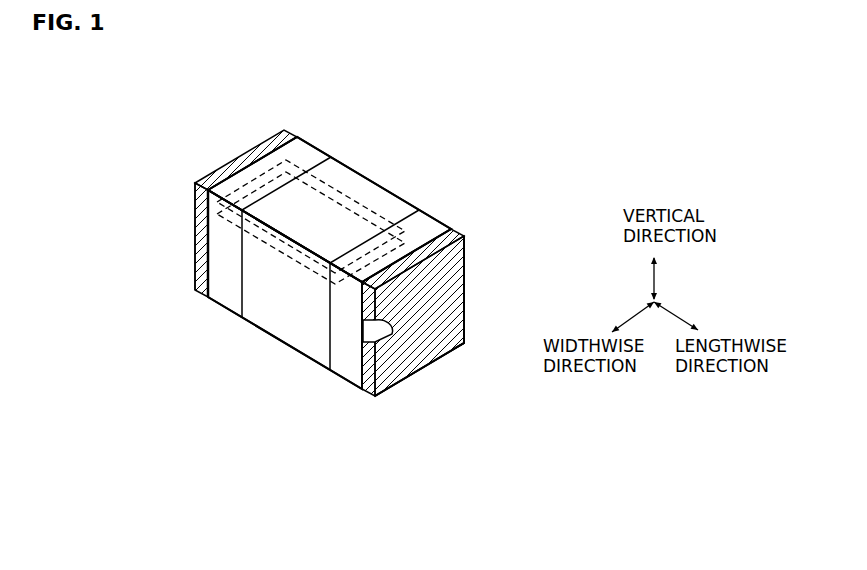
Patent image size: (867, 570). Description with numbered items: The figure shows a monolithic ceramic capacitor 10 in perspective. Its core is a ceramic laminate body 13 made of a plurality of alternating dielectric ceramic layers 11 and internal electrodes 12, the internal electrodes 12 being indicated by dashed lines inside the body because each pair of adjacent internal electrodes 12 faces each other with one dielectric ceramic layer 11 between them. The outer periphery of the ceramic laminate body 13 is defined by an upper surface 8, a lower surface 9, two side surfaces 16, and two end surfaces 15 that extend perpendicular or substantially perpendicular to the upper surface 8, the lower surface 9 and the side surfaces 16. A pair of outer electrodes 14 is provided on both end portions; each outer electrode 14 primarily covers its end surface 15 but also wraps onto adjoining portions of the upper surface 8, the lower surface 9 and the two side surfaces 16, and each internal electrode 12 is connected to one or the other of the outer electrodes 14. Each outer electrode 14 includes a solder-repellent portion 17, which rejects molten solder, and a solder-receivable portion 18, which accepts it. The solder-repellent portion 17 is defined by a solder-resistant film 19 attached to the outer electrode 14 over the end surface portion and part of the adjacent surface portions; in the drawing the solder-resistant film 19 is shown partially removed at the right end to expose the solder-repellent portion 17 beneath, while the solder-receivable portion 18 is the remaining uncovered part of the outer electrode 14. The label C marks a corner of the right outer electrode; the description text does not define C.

The upper surface 8 is at (367, 198).
The lower surface 9 is at (303, 313).
The monolithic ceramic capacitor 10 is at (402, 149).
The dielectric ceramic layer 11 is at (303, 262).
The internal electrode 12 is at (238, 260).
The ceramic laminate body 13 is at (268, 340).
The outer electrode 14 is at (88, 216).
The end surface 15 is at (396, 386).
The side surface 16 is at (280, 293).
The solder-repellent portion 17 is at (195, 248).
The solder-receivable portion 18 is at (213, 228).
The solder-resistant film 19 is at (196, 206).
The corner portion C is at (466, 348).